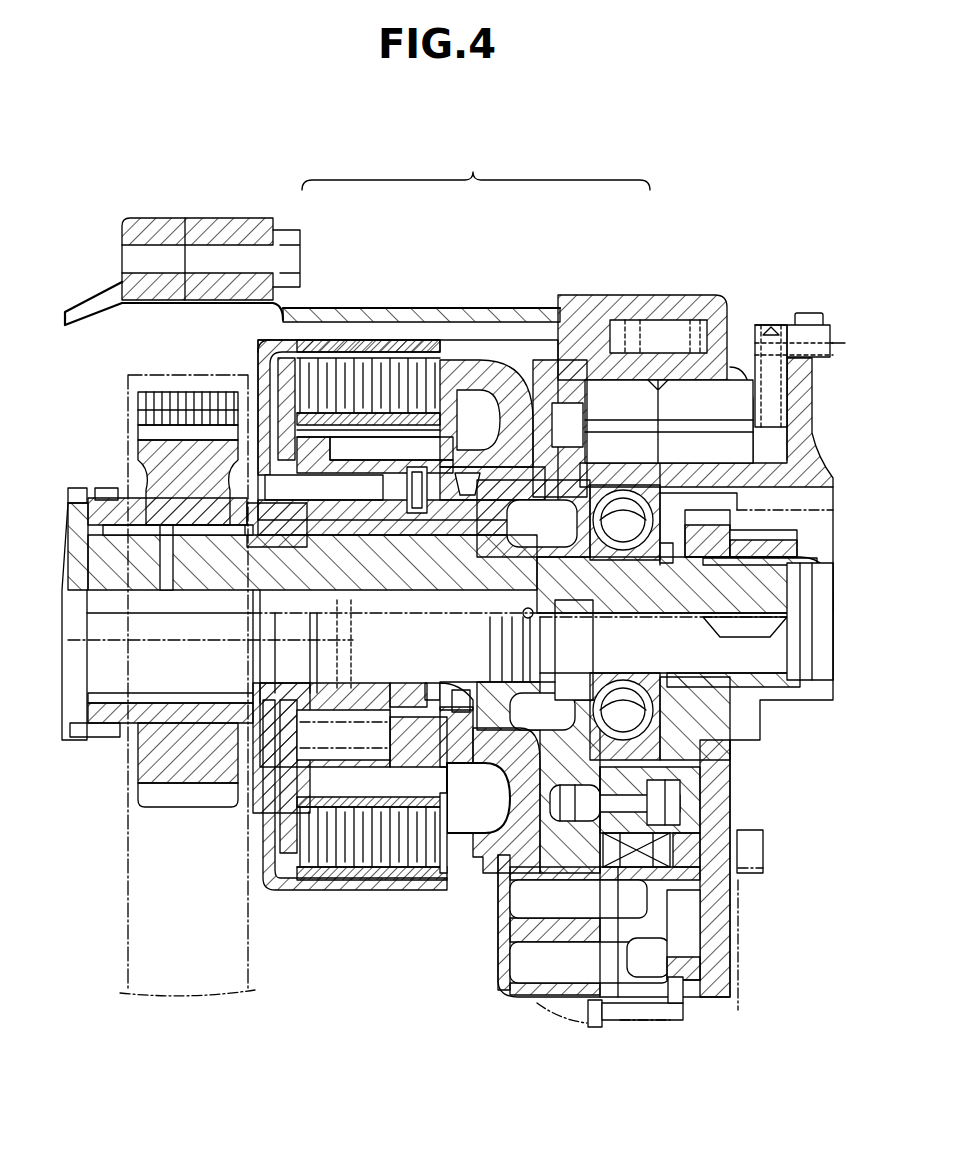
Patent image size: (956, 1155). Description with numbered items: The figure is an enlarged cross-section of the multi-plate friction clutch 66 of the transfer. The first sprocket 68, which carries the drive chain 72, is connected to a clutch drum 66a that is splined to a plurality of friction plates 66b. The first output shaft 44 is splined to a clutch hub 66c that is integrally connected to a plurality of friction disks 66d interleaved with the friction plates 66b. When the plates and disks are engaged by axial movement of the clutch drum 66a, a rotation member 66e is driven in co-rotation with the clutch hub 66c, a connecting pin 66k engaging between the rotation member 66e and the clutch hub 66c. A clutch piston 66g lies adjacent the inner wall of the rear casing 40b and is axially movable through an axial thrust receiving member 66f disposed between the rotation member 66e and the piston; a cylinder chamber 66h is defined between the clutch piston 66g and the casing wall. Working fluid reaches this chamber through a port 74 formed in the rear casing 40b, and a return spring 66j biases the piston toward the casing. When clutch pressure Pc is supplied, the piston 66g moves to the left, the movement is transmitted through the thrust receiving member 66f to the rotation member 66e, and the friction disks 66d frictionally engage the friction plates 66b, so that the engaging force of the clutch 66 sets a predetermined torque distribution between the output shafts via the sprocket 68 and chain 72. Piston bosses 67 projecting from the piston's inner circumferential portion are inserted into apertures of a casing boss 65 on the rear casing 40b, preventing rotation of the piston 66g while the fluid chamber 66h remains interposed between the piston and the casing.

The friction clutch 66 is at (454, 332).
The clutch drum 66a is at (287, 348).
The friction plates 66b is at (365, 365).
The clutch hub 66c is at (330, 360).
The friction disks 66d is at (418, 465).
The rotation member 66e is at (445, 365).
The thrust receiving member 66f is at (482, 398).
The clutch piston 66g is at (536, 395).
The cylinder chamber 66h is at (598, 395).
The return spring 66j is at (336, 898).
The connecting pin 66k is at (140, 487).
The rear casing 40b is at (650, 292).
The port 74 is at (740, 395).
The clutch pressure Pc is at (851, 352).
The first output shaft 44 is at (77, 557).
The first sprocket 68 is at (184, 807).
The drive chain 72 is at (140, 893).
The casing boss 65 is at (475, 715).
The piston bosses 67 is at (448, 710).